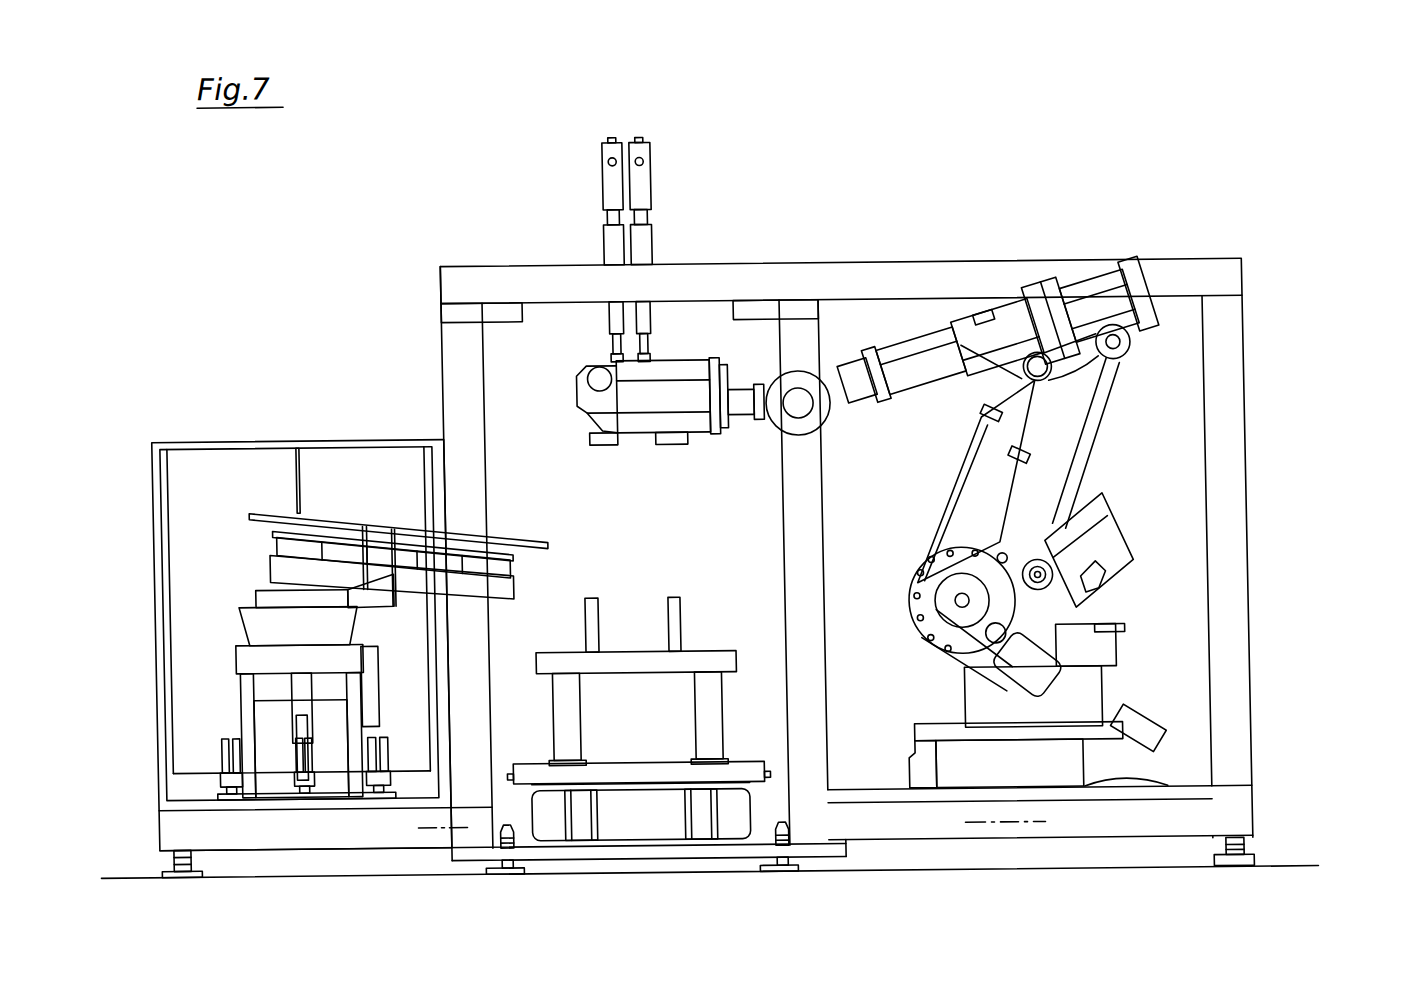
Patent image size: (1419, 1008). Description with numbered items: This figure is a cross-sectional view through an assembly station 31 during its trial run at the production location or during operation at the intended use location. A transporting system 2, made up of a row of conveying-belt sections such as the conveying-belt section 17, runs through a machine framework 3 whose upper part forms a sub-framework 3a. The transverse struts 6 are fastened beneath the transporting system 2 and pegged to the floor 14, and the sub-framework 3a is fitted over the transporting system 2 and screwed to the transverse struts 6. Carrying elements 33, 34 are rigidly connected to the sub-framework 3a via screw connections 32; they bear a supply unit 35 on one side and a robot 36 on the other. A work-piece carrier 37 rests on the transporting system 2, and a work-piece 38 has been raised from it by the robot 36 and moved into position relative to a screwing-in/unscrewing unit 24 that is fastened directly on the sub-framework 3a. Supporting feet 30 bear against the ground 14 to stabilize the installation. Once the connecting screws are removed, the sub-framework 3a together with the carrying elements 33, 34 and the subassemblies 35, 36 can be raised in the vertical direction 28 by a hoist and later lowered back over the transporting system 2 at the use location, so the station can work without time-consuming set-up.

The transporting system 2 is at (678, 794).
The machine framework 3 is at (737, 567).
The sub-framework 3a is at (801, 543).
The transverse struts 6 is at (703, 849).
The floor 14 is at (1277, 869).
The conveying-belt section 17 is at (647, 837).
The screwing-in/unscrewing unit 24 is at (647, 180).
The vertical direction (upward) 28 is at (764, 461).
The supporting foot 30 is at (1236, 864).
The assembly station 31 is at (890, 854).
The screw connections 32 is at (800, 284).
The carrying element 33 is at (176, 819).
The carrying element 34 is at (1227, 598).
The supply unit 35 is at (280, 556).
The robot 36 is at (1100, 546).
The work-piece carrier 37 is at (545, 661).
The work-piece 38 is at (592, 417).